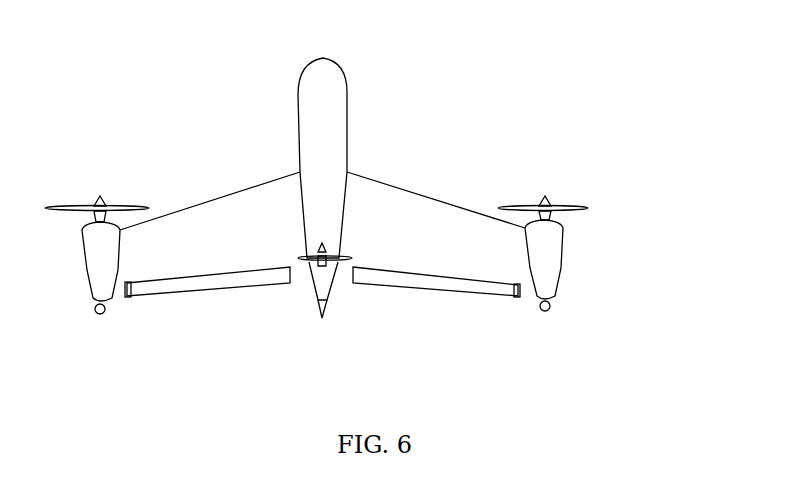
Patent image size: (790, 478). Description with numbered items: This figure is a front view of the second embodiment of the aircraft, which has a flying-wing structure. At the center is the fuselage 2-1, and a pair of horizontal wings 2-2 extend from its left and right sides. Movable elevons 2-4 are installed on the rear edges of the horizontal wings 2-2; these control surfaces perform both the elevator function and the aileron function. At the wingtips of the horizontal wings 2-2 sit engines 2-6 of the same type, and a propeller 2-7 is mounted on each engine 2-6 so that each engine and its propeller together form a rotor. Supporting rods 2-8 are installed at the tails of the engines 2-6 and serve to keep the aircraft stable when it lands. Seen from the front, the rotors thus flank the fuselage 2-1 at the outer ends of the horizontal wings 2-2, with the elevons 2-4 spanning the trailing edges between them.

The fuselage 2-1 is at (342, 75).
The horizontal wing 2-2 is at (408, 188).
The elevon 2-4 is at (417, 283).
The engine 2-6 is at (558, 253).
The propeller 2-7 is at (587, 210).
The supporting rod 2-8 is at (549, 308).